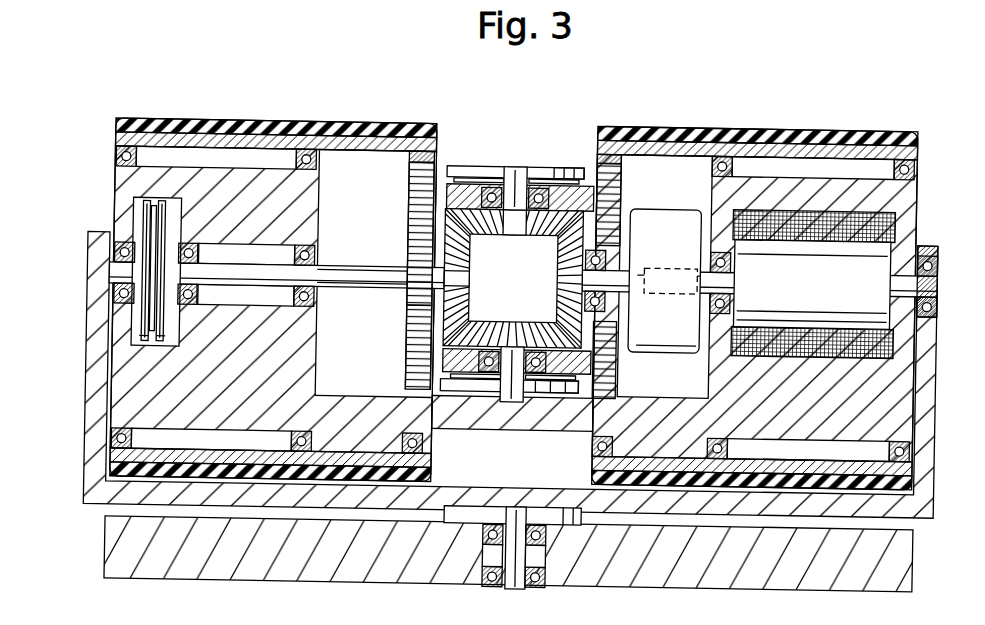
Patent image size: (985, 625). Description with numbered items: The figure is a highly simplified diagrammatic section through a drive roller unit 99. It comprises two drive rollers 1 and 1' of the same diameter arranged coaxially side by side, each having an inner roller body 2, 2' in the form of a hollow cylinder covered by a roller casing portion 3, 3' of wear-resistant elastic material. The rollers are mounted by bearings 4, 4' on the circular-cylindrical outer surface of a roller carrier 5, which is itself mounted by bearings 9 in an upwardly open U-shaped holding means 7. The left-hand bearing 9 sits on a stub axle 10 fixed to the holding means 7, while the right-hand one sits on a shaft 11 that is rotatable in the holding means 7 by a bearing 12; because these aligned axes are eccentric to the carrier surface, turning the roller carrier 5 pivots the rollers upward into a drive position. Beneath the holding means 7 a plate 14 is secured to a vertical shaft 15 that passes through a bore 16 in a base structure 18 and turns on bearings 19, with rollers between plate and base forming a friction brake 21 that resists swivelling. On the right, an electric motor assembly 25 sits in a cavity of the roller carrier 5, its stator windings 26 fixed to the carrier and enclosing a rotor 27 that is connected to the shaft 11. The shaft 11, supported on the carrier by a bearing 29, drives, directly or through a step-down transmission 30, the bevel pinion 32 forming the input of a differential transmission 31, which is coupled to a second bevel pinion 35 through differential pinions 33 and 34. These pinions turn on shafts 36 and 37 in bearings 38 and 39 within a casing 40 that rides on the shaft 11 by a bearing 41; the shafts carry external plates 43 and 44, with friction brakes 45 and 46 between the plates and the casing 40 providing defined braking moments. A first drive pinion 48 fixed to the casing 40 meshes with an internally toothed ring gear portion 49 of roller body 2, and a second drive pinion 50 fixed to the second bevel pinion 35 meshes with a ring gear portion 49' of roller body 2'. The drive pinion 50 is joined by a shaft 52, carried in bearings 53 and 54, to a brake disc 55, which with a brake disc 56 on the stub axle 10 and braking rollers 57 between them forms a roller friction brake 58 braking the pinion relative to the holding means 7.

The drive roller 1 is at (755, 284).
The drive roller 1' is at (274, 272).
The inner roller body 2 is at (782, 290).
The inner roller body 2' is at (251, 281).
The roller casing portion 3 is at (781, 298).
The roller casing portion 3' is at (251, 293).
The bearing 4 is at (817, 307).
The bearing 4' is at (208, 293).
The roller carrier 5 is at (142, 380).
The holding means 7 is at (934, 364).
The bearing 9 is at (124, 250).
The shaft journal or stub axle 10 is at (120, 270).
The shaft 11 is at (630, 291).
The bearing 12 is at (936, 296).
The plate 14 is at (455, 505).
The shaft 15 is at (520, 568).
The vertical bore 16 is at (548, 550).
The base structure 18 is at (715, 565).
The bearing 19 is at (492, 568).
The friction brake 21 is at (582, 516).
The electric motor assembly 25 is at (904, 231).
The stator windings 26 is at (902, 199).
The rotor 27 is at (880, 309).
The bearing 29 is at (705, 250).
The step-down transmission 30 is at (674, 335).
The differential transmission 31 is at (504, 158).
The bevel pinion 32 is at (570, 275).
The differential pinion 33 is at (532, 323).
The differential pinion 34 is at (512, 221).
The second bevel pinion 35 is at (470, 276).
The shaft 36 is at (514, 368).
The shaft 37 is at (516, 171).
The bearing 38 is at (414, 347).
The bearing 39 is at (541, 183).
The casing 40 is at (566, 164).
The bearing 41 is at (615, 248).
The plate 43 is at (487, 381).
The plate 44 is at (466, 174).
The friction brake 45 is at (554, 372).
The friction brake 46 is at (433, 150).
The first drive pinion 48 is at (624, 201).
The internally toothed ring gear portion 49 is at (602, 312).
The internally toothed ring gear portion 49' is at (416, 309).
The second drive pinion 50 is at (411, 198).
The shaft 52 is at (386, 265).
The bearing 53 is at (321, 300).
The bearing 54 is at (199, 242).
The brake disc 55 is at (182, 206).
The brake disc 56 is at (149, 212).
The braking rollers 57 is at (154, 322).
The friction brake 58 is at (143, 308).
The drive roller 99 is at (608, 104).